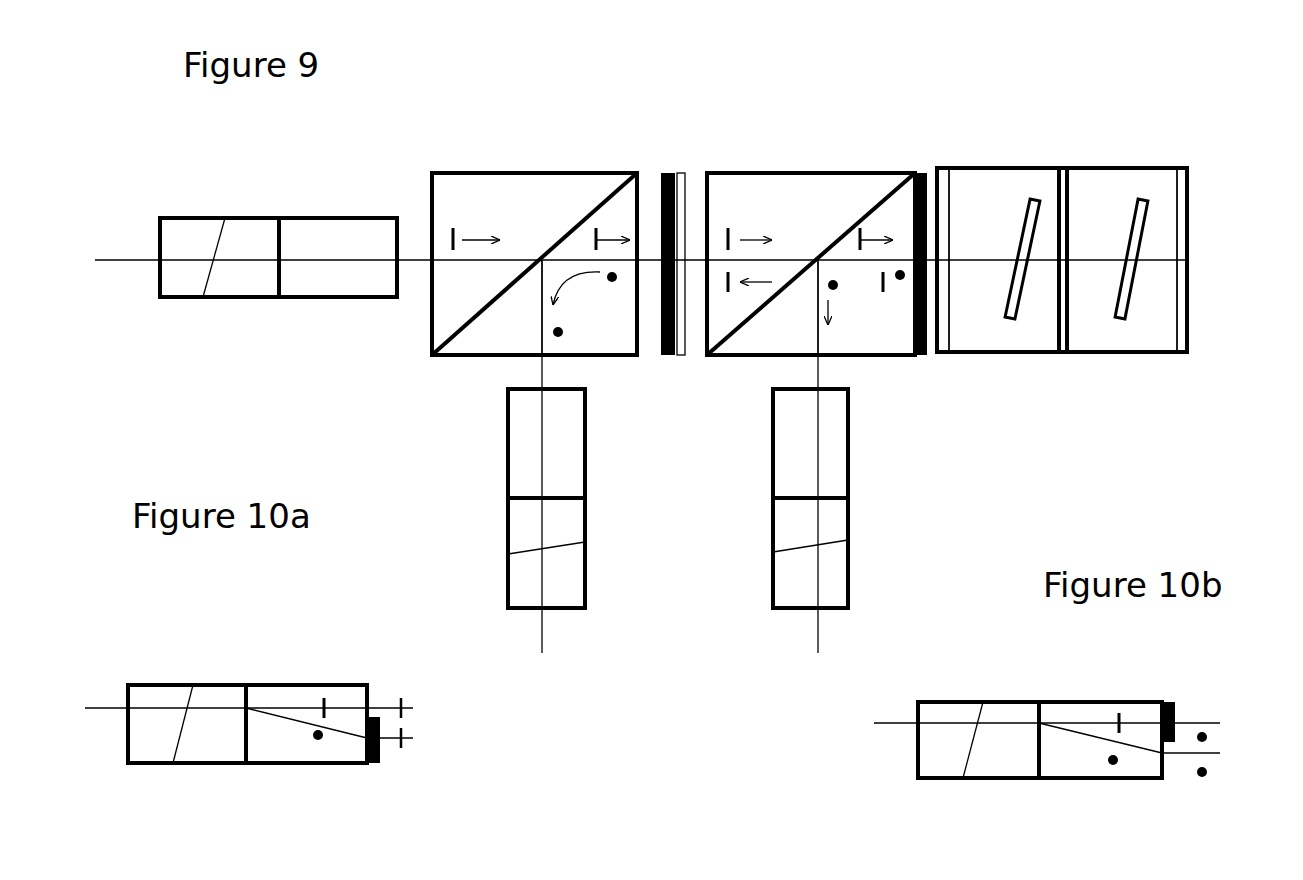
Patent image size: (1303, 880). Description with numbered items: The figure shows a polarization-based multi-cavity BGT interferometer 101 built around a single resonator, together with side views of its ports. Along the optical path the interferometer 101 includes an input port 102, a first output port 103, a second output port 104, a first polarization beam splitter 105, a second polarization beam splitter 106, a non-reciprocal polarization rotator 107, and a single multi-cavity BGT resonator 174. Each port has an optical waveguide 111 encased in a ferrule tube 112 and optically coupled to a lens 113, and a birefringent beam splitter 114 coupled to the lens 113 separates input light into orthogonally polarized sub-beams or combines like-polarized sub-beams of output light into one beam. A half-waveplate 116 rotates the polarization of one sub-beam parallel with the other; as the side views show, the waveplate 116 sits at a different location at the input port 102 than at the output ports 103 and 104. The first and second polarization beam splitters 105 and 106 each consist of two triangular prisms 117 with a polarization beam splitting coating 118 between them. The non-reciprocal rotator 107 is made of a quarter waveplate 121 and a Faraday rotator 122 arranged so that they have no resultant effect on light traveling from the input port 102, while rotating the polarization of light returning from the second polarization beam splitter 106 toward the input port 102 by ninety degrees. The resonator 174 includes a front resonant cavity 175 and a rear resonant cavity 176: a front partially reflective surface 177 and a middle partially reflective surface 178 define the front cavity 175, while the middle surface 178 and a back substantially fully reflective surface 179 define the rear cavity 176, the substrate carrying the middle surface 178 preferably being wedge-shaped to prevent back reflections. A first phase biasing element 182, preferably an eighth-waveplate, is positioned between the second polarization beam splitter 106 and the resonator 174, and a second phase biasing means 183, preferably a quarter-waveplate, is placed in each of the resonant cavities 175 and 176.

In FIG. 9, the interferometer 101 is at (517, 95).
In FIG. 9, the input port 102 is at (232, 345).
In FIG. 10A, the input port 102 is at (215, 640).
In FIG. 9, the first output port 103 is at (450, 500).
In FIG. 10B, the first output port 103 is at (870, 757).
In FIG. 9, the second output port 104 is at (908, 508).
In FIG. 10B, the second output port 104 is at (964, 771).
In FIG. 9, the first polarization beam splitter 105 is at (487, 185).
In FIG. 9, the second polarization beam splitter 106 is at (895, 353).
In FIG. 9, the non-reciprocal polarization rotator 107 is at (691, 208).
In FIG. 9, the optical waveguide 111 is at (128, 265).
In FIG. 10A, the optical waveguide 111 is at (108, 710).
In FIG. 10B, the optical waveguide 111 is at (910, 725).
In FIG. 9, the ferrule tube 112 is at (182, 232).
In FIG. 10A, the ferrule tube 112 is at (163, 697).
In FIG. 10B, the ferrule tube 112 is at (940, 712).
In FIG. 9, the lens 113 is at (247, 230).
In FIG. 10A, the lens 113 is at (205, 765).
In FIG. 10B, the lens 113 is at (1008, 765).
In FIG. 9, the birefringent beam splitter 114 is at (378, 232).
In FIG. 10A, the birefringent beam splitter 114 is at (303, 698).
In FIG. 10B, the birefringent beam splitter 114 is at (1117, 700).
In FIG. 10A, the ½-waveplate 116 is at (382, 752).
In FIG. 10B, the ½-waveplate 116 is at (1175, 705).
In FIG. 9, the triangular prism 117 is at (481, 224).
In FIG. 9, the polarization beam splitting coating 118 is at (473, 323).
In FIG. 9, the ¼ waveplate 121 is at (690, 177).
In FIG. 9, the Faraday rotator 122 is at (661, 173).
In FIG. 9, the multi-cavity BGT resonator 174 is at (1105, 271).
In FIG. 9, the front resonant cavity 175 is at (983, 333).
In FIG. 9, the rear resonant cavity 176 is at (1103, 190).
In FIG. 9, the front partially reflective surface 177 is at (937, 175).
In FIG. 9, the middle partially reflective surface 178 is at (1060, 168).
In FIG. 9, the back substantially fully reflective surface 179 is at (1187, 335).
In FIG. 9, the first phase biasing element 182 is at (920, 170).
In FIG. 9, the second phase biasing means 183 is at (1010, 318).